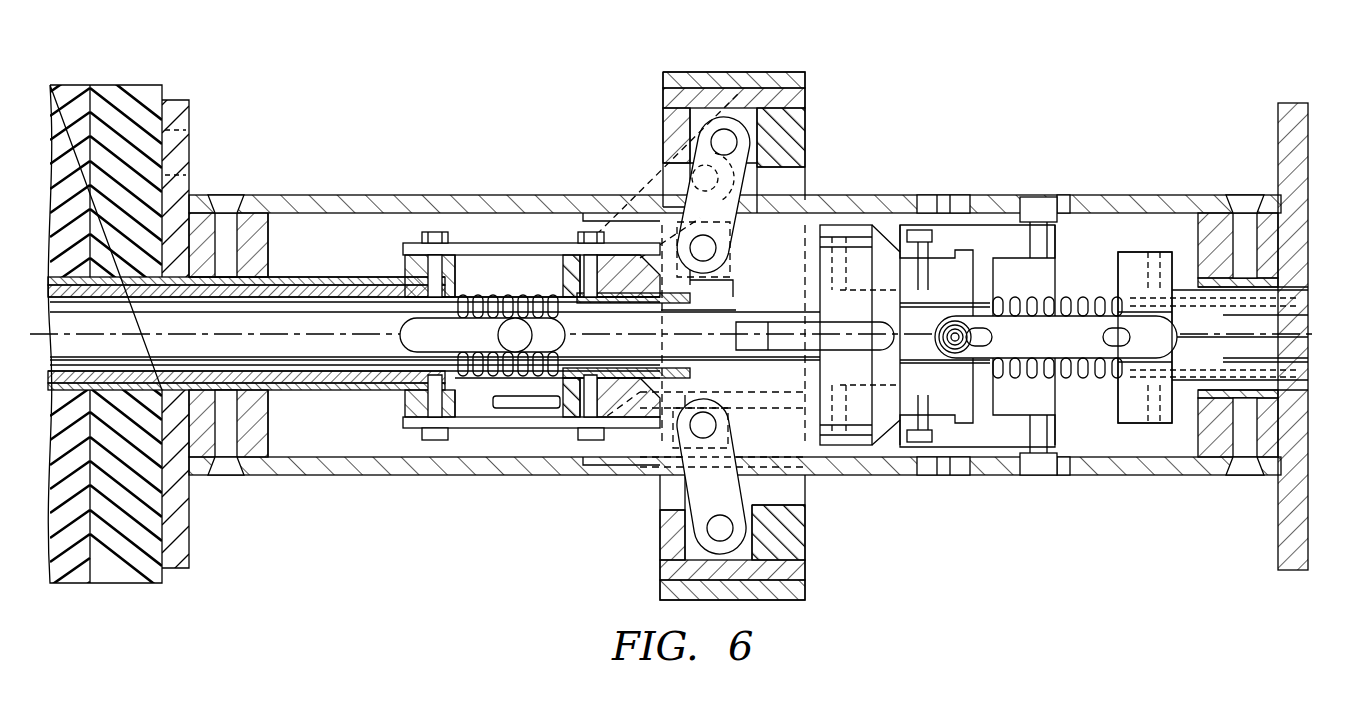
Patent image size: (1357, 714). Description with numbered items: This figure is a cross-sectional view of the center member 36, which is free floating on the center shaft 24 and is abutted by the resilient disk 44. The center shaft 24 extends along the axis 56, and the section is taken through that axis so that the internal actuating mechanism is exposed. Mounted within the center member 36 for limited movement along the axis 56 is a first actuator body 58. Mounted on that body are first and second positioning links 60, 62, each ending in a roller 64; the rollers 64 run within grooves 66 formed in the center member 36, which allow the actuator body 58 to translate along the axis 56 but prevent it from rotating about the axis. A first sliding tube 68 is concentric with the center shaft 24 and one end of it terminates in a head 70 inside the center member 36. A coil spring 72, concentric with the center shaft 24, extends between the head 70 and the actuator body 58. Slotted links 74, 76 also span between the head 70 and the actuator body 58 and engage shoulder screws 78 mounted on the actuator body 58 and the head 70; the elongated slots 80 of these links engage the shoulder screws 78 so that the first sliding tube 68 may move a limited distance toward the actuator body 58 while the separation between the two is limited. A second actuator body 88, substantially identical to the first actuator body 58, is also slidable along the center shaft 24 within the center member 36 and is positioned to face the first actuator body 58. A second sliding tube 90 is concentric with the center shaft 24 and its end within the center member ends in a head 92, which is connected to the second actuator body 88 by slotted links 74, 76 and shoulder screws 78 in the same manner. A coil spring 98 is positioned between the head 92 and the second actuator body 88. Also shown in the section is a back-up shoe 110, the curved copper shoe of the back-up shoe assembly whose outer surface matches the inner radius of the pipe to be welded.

The center shaft 24 is at (1300, 350).
The center member 36 is at (1150, 197).
The disk 44 is at (122, 92).
The axis 56 is at (45, 332).
The first actuator body 58 is at (882, 258).
The first positioning link 60 is at (1000, 228).
The second positioning link 62 is at (998, 448).
The roller 64 is at (548, 334).
The groove 66 is at (413, 332).
The first sliding tube 68 is at (1296, 292).
The head 70 is at (1118, 410).
The coil spring 72 is at (1070, 296).
The slotted link 74 is at (508, 245).
The slotted link 76 is at (517, 430).
The shoulder screw 78 is at (435, 232).
The elongated slot 80 is at (415, 243).
The second actuator body 88 is at (645, 248).
The second sliding tube 90 is at (312, 283).
The head 92 is at (405, 404).
The coil spring 98 is at (493, 290).
The back-up shoe 110 is at (712, 72).